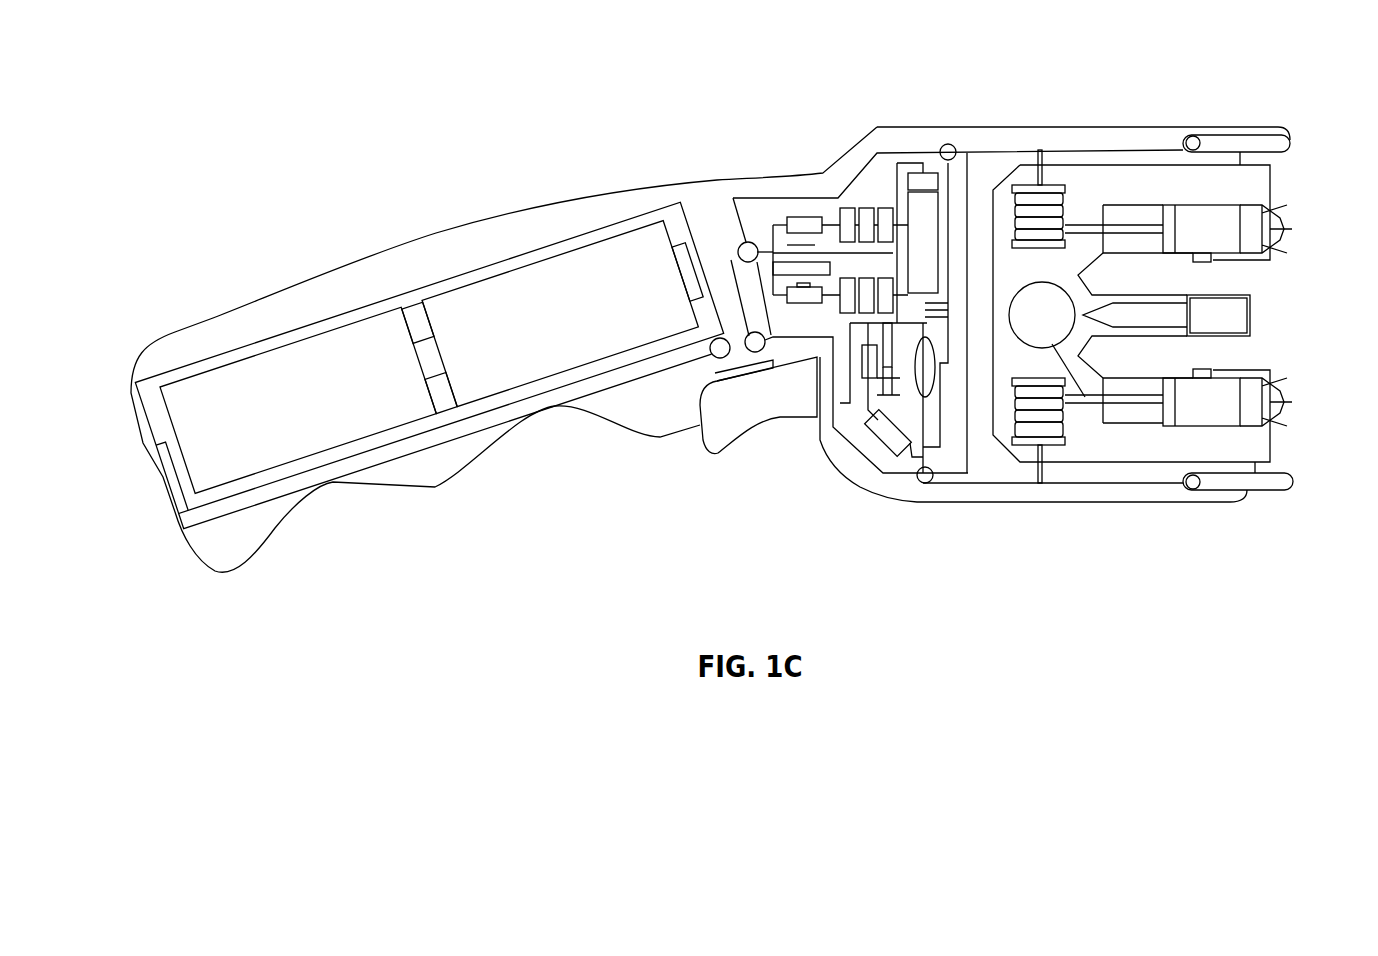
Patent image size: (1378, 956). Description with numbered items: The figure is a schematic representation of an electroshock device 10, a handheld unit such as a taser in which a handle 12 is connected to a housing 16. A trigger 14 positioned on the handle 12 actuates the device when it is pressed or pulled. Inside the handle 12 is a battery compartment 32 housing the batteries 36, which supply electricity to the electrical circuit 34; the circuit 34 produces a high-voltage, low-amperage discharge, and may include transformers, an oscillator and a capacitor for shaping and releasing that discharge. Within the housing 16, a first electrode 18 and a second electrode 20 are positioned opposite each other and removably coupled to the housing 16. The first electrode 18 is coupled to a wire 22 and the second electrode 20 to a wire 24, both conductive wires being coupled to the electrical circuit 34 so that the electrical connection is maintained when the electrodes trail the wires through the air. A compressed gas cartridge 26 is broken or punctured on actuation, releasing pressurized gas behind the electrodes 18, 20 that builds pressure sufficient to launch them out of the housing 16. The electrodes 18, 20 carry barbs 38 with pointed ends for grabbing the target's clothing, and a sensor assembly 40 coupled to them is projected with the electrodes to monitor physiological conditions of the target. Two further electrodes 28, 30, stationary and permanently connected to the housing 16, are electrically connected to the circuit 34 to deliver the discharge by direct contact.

The electroshock device 10 is at (245, 97).
The handle 12 is at (400, 475).
The trigger 14 is at (717, 450).
The housing 16 is at (1040, 127).
The first electrode 18 is at (1192, 223).
The second electrode 20 is at (1210, 408).
The wire 22 is at (1047, 278).
The wire 24 is at (1120, 400).
The cartridge 26 is at (1048, 297).
The electrode 28 is at (1292, 140).
The electrode 30 is at (1293, 484).
The battery compartment 32 is at (363, 305).
The electrical circuit 34 is at (830, 220).
The batteries 36 is at (312, 410).
The barbs 38 is at (1281, 217).
The sensor assembly 40 is at (1213, 260).